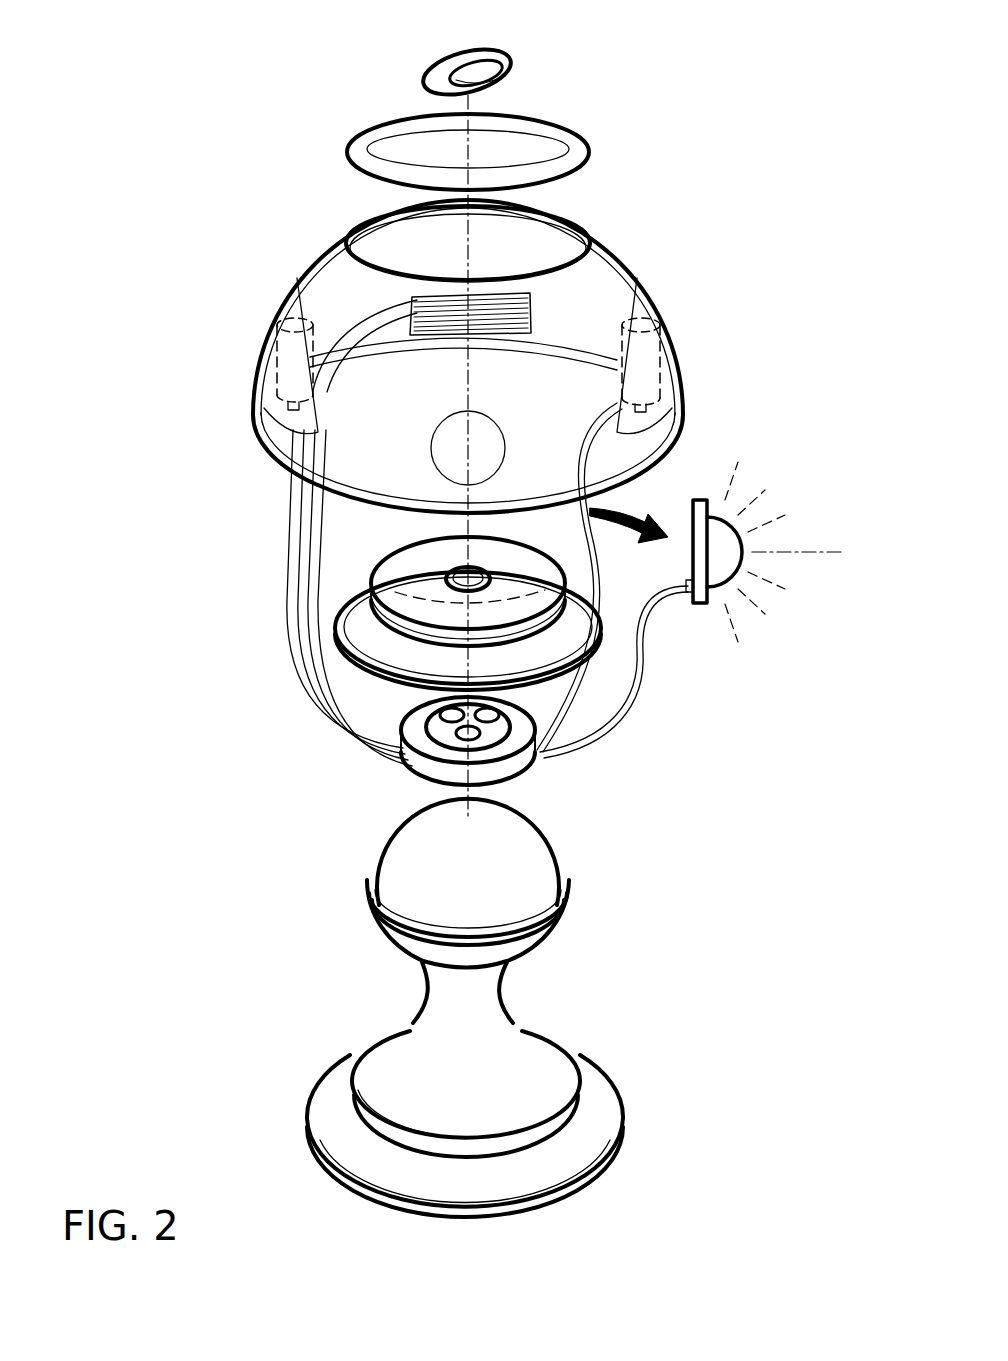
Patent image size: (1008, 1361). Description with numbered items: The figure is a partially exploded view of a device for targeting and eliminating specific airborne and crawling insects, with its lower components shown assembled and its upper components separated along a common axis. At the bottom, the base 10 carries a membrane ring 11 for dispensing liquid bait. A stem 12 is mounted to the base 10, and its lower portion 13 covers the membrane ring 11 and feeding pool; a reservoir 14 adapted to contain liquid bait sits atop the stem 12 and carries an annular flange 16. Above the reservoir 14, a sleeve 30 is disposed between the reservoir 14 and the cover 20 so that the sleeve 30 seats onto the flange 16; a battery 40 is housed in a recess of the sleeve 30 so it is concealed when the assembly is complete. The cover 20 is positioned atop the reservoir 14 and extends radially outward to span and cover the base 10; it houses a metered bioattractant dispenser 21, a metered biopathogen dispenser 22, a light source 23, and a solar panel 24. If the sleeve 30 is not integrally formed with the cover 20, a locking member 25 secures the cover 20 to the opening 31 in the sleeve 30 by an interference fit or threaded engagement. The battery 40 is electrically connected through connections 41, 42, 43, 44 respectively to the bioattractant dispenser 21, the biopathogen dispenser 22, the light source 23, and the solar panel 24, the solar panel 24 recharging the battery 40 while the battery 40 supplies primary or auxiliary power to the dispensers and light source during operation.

The base 10 is at (587, 1150).
The membrane ring 11 is at (547, 1125).
The stem 12 is at (475, 1010).
The lower portion 13 is at (387, 1065).
The reservoir 14 is at (502, 865).
The flange 16 is at (363, 893).
The cover 20 is at (595, 268).
The metered bioattractant dispenser 21 is at (250, 368).
The metered biopathogen dispenser 22 is at (688, 337).
The light source 23 is at (722, 532).
The solar panel 24 is at (395, 290).
The locking member 25 is at (487, 63).
The sleeve 30 is at (390, 627).
The opening 31 is at (377, 577).
The battery 40 is at (438, 748).
The electrical connection 41 is at (323, 692).
The electrical connection 42 is at (615, 592).
The electrical connection 43 is at (630, 697).
The electrical connection 44 is at (313, 515).